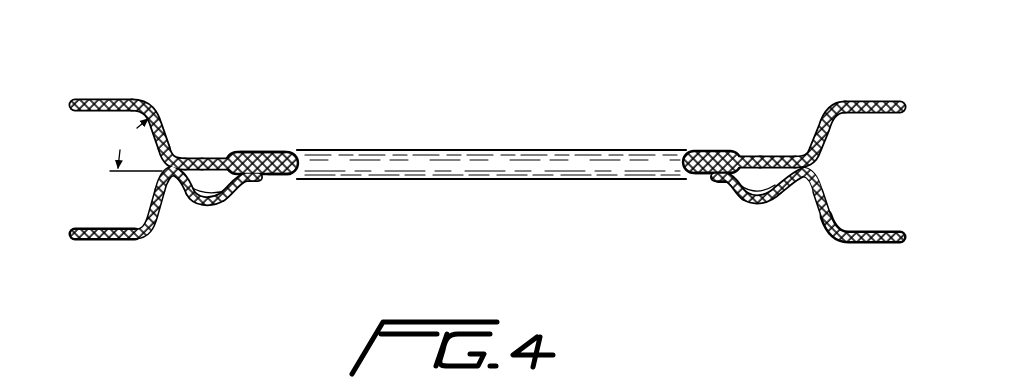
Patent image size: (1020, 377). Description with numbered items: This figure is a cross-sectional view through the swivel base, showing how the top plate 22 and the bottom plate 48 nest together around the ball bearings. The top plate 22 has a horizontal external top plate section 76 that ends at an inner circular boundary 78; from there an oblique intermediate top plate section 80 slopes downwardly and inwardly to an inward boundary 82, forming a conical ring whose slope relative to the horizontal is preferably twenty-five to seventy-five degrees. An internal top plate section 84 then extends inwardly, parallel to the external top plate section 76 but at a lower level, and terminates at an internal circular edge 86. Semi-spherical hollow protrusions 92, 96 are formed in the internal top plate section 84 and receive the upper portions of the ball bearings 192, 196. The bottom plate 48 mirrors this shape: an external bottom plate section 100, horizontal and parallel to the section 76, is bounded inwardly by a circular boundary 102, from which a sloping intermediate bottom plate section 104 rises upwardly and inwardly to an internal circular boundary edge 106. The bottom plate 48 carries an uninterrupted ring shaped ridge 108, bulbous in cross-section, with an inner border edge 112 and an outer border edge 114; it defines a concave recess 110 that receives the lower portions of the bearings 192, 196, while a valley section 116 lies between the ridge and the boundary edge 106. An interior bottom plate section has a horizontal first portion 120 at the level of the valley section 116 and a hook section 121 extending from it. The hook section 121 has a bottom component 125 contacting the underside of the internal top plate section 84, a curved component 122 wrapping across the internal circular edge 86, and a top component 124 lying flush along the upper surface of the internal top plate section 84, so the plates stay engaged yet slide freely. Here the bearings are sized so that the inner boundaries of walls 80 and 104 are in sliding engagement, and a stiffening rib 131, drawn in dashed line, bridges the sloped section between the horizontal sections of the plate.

The top plate 22 is at (856, 96).
The bottom plate 48 is at (880, 243).
The external top plate section 76 is at (97, 97).
The inner circular boundary 78 is at (140, 98).
The intermediate top plate section 80 is at (165, 148).
The inward boundary 82 is at (182, 158).
The internal top plate section 84 is at (213, 156).
The internal circular edge 86 is at (290, 151).
The semi-spherical hollow protrusion 92 is at (255, 152).
The semi-spherical hollow protrusion 96 is at (738, 150).
The external bottom plate section 100 is at (78, 242).
The circular boundary 102 is at (148, 218).
The intermediate bottom plate section 104 is at (165, 222).
The internal circular boundary edge 106 is at (183, 202).
The ring shaped ridge 108 is at (235, 200).
The concave recess 110 is at (250, 188).
The inner border edge 112 is at (735, 190).
The outer border edge 114 is at (778, 192).
The valley section 116 is at (786, 190).
The first portion 120 is at (297, 182).
The hook section 121 is at (700, 150).
The curved component 122 is at (300, 152).
The top component 124 is at (708, 150).
The bottom component 125 is at (700, 180).
The stiffening rib 131 is at (108, 170).
The ball bearing 192 is at (232, 152).
The ball bearing 196 is at (773, 152).